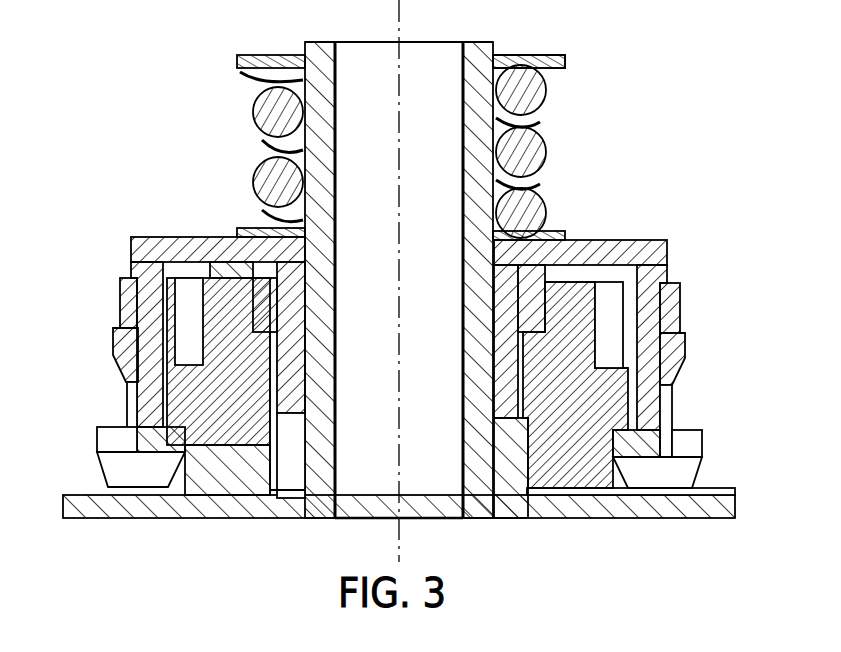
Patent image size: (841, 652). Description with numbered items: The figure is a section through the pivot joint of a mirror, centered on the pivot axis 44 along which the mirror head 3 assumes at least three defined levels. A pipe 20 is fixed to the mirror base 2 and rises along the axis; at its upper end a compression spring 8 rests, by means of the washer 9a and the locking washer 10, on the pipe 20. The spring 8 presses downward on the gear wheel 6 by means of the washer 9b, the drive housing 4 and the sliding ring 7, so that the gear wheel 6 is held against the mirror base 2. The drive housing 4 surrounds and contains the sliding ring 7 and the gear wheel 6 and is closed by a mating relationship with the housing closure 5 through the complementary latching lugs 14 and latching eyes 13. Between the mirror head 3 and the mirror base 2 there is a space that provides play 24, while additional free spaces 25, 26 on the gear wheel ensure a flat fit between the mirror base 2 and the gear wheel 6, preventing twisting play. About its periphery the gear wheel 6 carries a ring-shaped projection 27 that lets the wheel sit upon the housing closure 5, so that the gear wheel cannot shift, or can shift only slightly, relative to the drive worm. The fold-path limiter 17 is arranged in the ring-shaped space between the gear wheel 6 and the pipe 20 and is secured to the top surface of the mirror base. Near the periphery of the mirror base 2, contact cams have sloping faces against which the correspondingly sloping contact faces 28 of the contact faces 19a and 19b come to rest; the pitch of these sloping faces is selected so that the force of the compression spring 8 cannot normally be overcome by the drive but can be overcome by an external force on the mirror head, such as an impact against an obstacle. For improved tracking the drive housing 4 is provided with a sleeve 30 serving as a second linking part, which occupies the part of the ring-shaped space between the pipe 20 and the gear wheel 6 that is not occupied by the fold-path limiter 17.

The mirror base 2 is at (665, 518).
The mirror head 3 is at (650, 240).
The drive housing 4 is at (580, 240).
The housing closure 5 is at (150, 430).
The gear wheel 6 is at (216, 276).
The sliding ring 7 is at (152, 238).
The compression spring 8 is at (262, 116).
The washer 9a is at (560, 72).
The washer 9b is at (248, 228).
The locking washer 10 is at (538, 56).
The latching eyes 13 is at (680, 300).
The latching lugs 14 is at (680, 350).
The fold-path limiter 17 is at (508, 462).
The contact face 19a is at (688, 438).
The contact face 19b is at (108, 440).
The pipe 20 is at (318, 52).
The play 24 is at (110, 486).
The free space 25 is at (234, 458).
The free space 26 is at (612, 498).
The ring-shaped projection 27 is at (625, 410).
The sloping contact faces 28 is at (684, 470).
The sleeve 30 is at (300, 412).
The pivot axis 44 is at (396, 26).